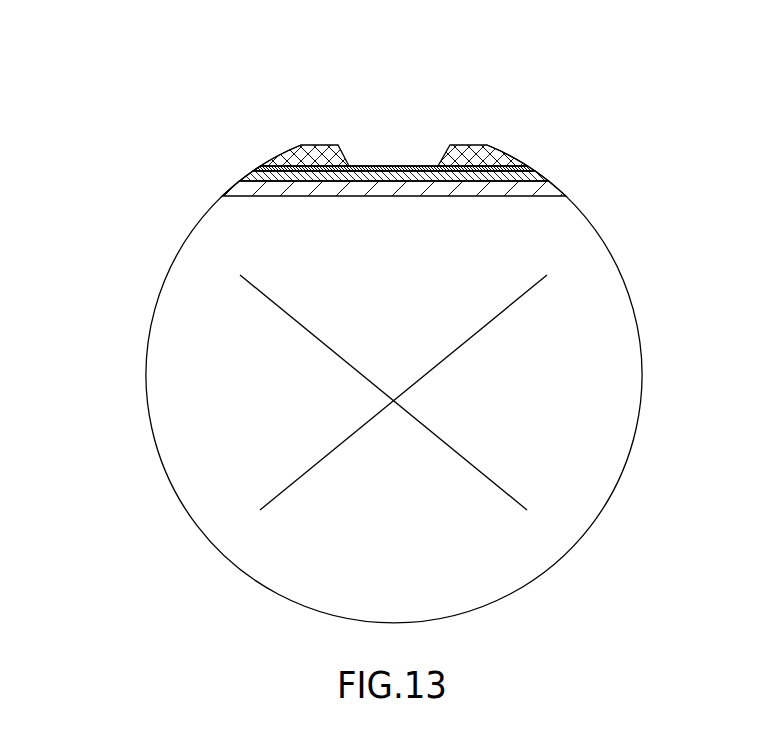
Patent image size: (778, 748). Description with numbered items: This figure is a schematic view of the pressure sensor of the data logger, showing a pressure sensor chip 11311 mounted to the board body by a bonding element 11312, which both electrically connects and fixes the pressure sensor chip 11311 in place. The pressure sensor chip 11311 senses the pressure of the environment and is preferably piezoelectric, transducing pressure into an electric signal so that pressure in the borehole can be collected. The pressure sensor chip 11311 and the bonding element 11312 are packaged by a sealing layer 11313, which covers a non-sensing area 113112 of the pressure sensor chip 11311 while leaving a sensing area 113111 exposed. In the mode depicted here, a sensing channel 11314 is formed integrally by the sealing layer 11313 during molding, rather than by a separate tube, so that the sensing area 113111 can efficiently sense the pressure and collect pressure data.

The pressure sensor chip 11311 is at (377, 145).
The bonding element 11312 is at (246, 177).
The sealing layer 11313 is at (500, 155).
The sensing channel 11314 is at (360, 145).
The sensing area 113111 is at (424, 166).
The non-sensing area 113112 is at (349, 170).